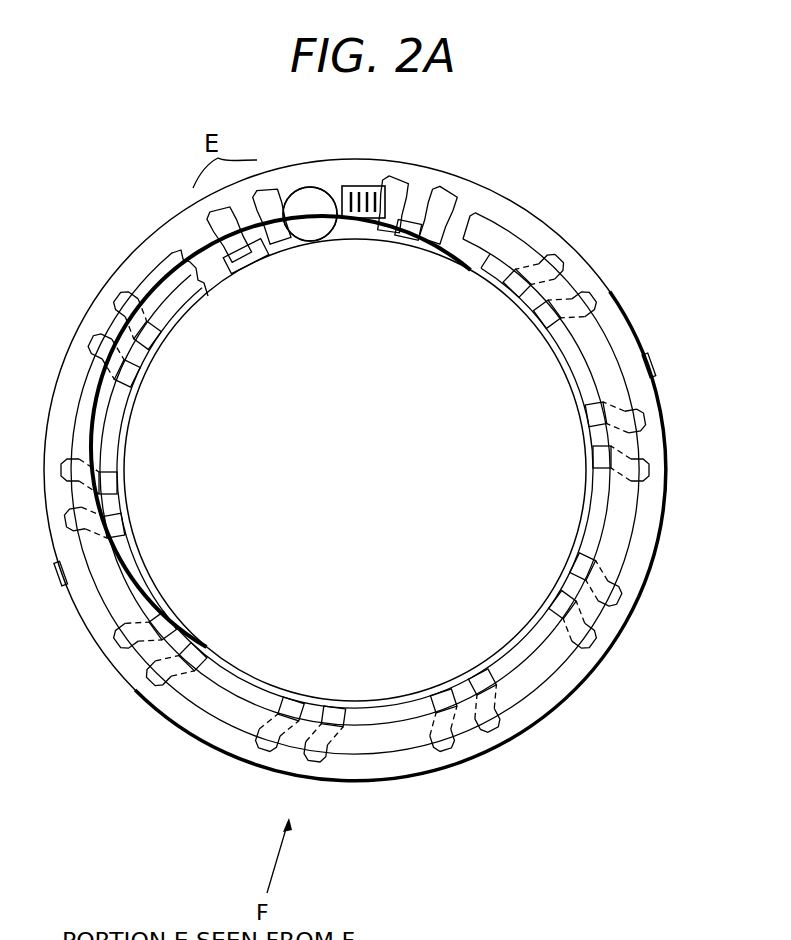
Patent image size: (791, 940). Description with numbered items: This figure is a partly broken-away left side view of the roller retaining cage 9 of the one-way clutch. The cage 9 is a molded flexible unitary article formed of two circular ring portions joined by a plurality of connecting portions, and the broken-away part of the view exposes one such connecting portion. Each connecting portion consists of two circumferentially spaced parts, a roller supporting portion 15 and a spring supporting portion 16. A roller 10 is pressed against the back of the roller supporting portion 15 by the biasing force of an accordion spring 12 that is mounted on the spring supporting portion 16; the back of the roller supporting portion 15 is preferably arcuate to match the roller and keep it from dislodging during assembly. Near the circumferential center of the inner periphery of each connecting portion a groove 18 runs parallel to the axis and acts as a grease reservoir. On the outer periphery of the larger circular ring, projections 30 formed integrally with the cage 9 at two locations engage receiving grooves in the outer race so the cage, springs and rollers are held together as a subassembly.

The roller retaining cage 9 is at (622, 303).
The roller 10 is at (303, 197).
The accordion spring 12 is at (351, 185).
The roller supporting portion 15 is at (280, 240).
The spring supporting portion 16 is at (217, 240).
The groove 18 is at (140, 350).
The projection 30 is at (656, 360).